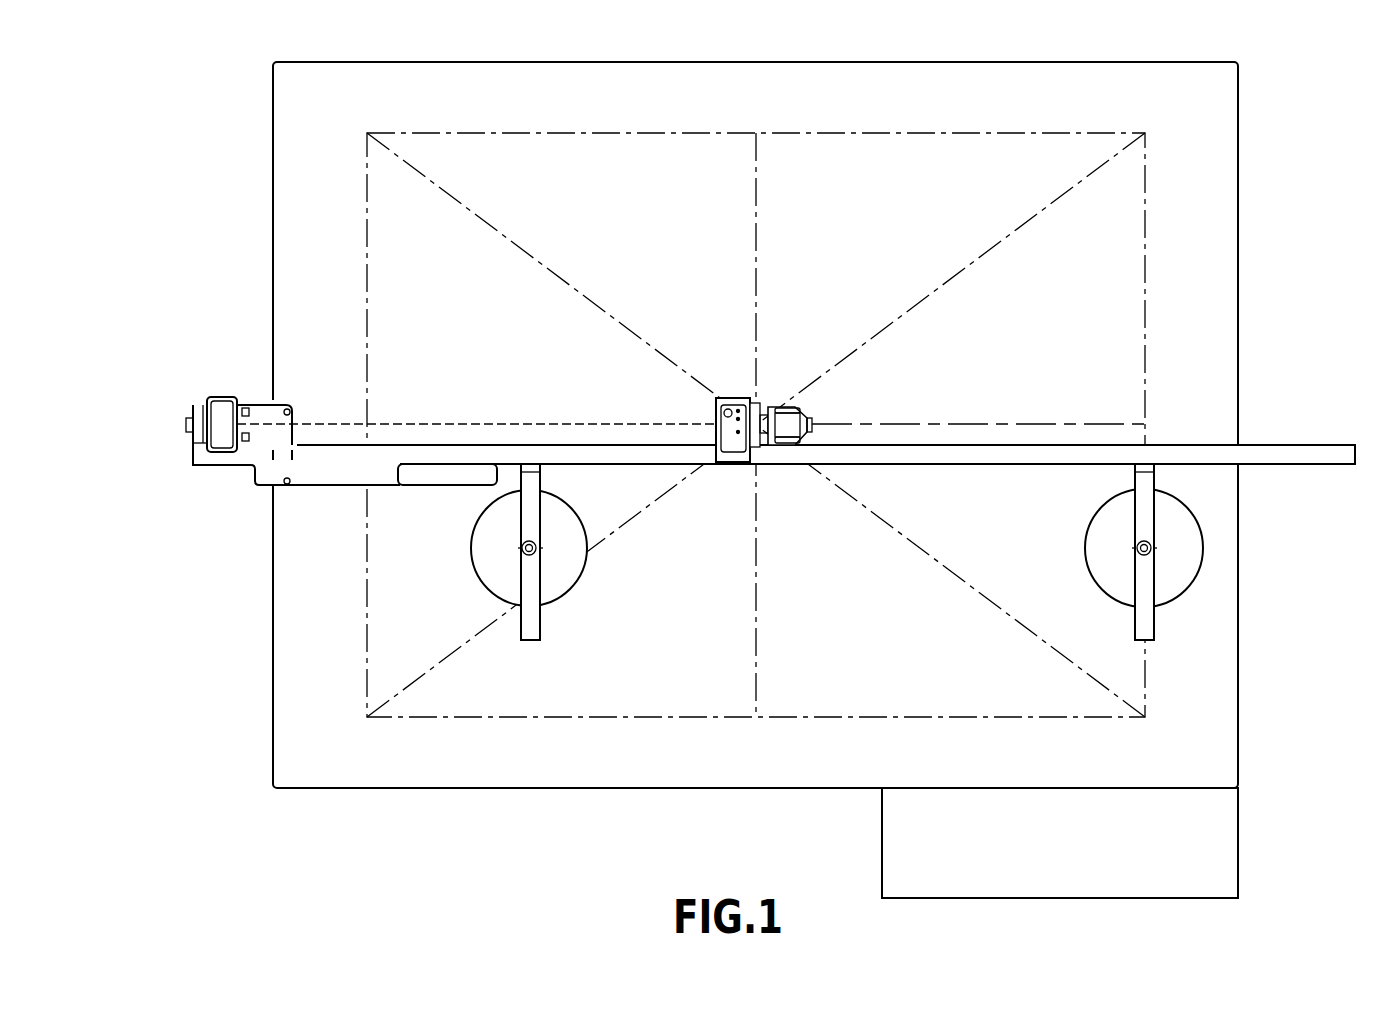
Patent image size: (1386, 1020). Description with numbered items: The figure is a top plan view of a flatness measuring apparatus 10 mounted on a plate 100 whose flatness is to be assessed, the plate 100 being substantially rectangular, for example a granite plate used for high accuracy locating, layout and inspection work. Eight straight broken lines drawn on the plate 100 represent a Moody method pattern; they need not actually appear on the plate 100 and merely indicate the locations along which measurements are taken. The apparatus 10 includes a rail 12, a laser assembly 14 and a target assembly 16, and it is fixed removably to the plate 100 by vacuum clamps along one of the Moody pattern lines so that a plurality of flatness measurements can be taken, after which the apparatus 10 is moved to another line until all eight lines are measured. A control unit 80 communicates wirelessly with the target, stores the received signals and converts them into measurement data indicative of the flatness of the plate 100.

The apparatus 10 is at (190, 382).
The rail 12 is at (1296, 453).
The laser assembly 14 is at (270, 473).
The target assembly 16 is at (733, 398).
The control unit 80 is at (1215, 869).
The plate 100 is at (611, 73).